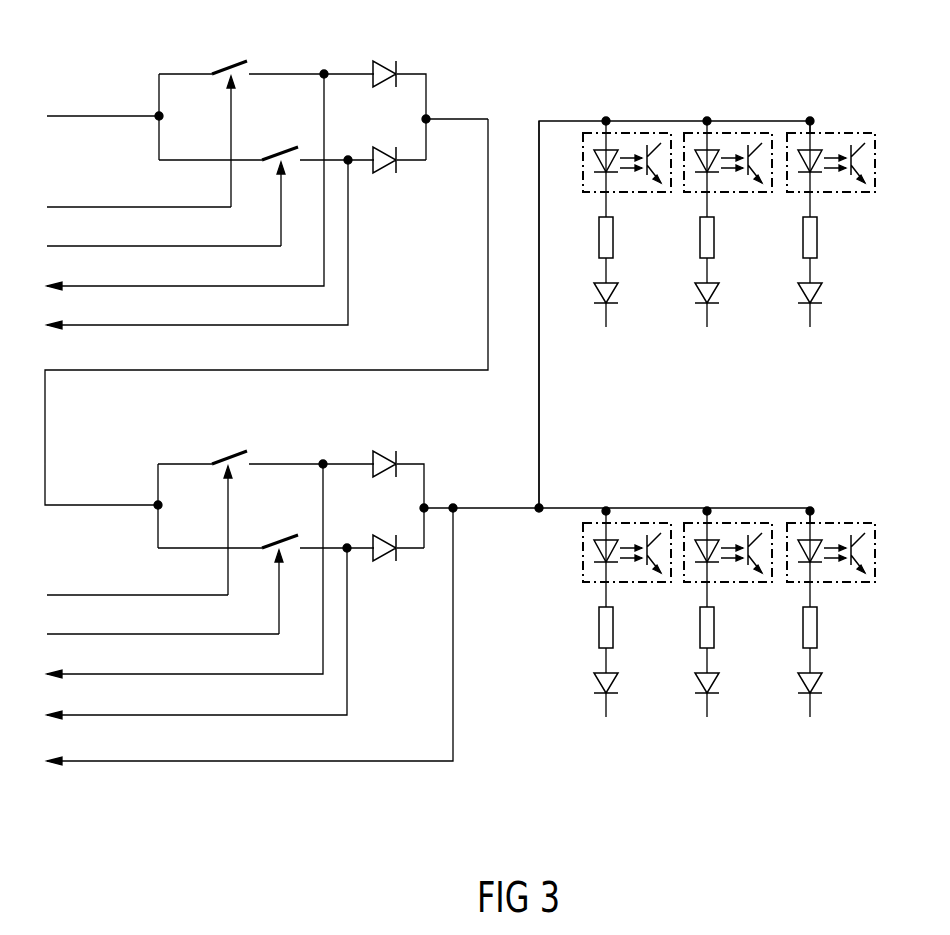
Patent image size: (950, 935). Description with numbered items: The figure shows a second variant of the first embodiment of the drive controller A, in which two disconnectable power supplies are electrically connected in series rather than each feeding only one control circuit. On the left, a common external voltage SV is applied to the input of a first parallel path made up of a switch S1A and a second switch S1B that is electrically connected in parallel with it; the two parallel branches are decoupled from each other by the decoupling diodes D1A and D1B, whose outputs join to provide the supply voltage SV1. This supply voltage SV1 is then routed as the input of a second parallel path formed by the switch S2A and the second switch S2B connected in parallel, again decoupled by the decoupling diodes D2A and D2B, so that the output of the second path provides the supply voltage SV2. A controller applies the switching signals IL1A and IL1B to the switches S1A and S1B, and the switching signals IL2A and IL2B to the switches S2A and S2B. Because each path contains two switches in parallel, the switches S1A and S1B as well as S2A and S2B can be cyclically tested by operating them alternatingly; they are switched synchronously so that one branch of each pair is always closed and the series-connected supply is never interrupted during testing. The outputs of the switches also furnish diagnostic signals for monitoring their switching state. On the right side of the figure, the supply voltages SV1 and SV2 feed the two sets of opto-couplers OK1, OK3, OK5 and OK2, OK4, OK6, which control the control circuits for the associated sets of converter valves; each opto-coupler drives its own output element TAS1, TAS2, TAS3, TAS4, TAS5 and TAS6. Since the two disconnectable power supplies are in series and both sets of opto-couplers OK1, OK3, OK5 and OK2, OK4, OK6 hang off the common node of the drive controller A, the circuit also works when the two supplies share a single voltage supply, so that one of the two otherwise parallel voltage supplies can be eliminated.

The common external voltage SV is at (105, 103).
The switch S1A is at (216, 63).
The second switch S1B is at (270, 148).
The decoupling diode D1A is at (386, 64).
The decoupling diode D1B is at (387, 174).
The supply voltage SV1 is at (457, 103).
The switching signal IL1A is at (139, 193).
The switching signal IL1B is at (164, 233).
The switch S2A is at (216, 455).
The second switch S2B is at (270, 538).
The decoupling diode D2A is at (386, 452).
The decoupling diode D2B is at (387, 562).
The supply voltage SV2 is at (617, 492).
The switching signal IL2A is at (137, 579).
The switching signal IL2B is at (163, 621).
The opto-coupler OK1 is at (627, 145).
The opto-coupler OK2 is at (627, 536).
The opto-coupler OK3 is at (728, 145).
The opto-coupler OK4 is at (728, 536).
The opto-coupler OK5 is at (831, 145).
The opto-coupler OK6 is at (831, 536).
The actuator output stage 1 TAS1 is at (607, 285).
The actuator output stage 2 TAS2 is at (605, 676).
The actuator output stage 3 TAS3 is at (708, 285).
The actuator output stage 4 TAS4 is at (706, 676).
The actuator output stage 5 TAS5 is at (809, 285).
The actuator output stage 6 TAS6 is at (809, 676).
The drive controller A is at (571, 314).